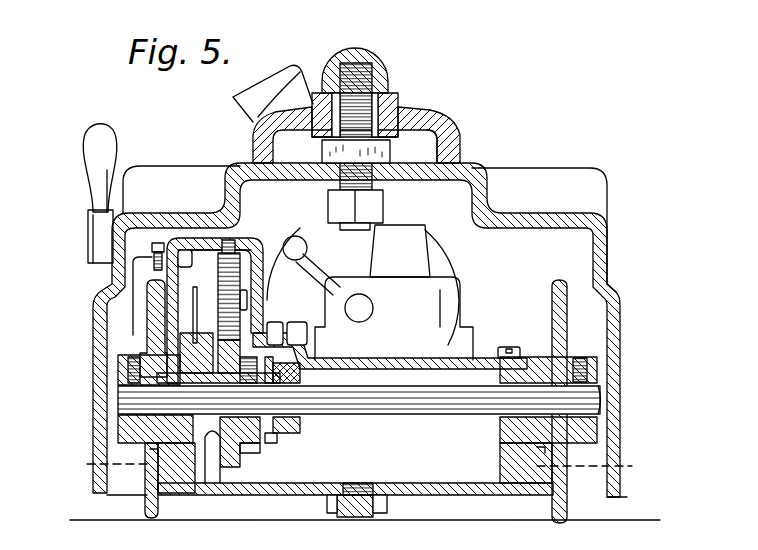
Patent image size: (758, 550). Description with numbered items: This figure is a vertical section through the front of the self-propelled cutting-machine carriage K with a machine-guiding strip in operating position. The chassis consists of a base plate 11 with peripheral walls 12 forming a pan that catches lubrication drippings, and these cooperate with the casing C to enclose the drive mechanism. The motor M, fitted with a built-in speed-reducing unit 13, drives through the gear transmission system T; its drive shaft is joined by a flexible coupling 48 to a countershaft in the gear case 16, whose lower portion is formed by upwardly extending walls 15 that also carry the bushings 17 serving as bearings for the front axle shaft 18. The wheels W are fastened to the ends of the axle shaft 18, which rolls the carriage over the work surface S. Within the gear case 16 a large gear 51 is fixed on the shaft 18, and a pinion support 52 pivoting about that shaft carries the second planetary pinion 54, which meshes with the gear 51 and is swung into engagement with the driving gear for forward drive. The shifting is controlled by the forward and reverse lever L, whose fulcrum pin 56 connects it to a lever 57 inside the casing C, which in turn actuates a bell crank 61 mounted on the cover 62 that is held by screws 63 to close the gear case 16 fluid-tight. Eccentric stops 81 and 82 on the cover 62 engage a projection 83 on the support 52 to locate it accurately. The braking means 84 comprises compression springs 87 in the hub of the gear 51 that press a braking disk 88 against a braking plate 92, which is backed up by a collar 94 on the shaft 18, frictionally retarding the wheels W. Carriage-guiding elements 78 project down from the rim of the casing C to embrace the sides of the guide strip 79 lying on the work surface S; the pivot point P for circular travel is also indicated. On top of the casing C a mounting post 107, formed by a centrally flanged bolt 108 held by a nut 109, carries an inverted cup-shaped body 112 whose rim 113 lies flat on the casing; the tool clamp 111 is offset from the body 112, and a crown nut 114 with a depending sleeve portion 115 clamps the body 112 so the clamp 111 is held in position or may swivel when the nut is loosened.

The base plate 11 is at (257, 495).
The walls 12 is at (356, 466).
The speed-reducing unit 13 is at (447, 337).
The walls 15 is at (157, 450).
The gear case 16 is at (263, 286).
The bushings 17 is at (118, 425).
The front axle shaft 18 is at (383, 412).
The flexible coupling 48 is at (298, 322).
The gear 51 is at (230, 480).
The pinion support 52 is at (183, 302).
The second planetary pinion 54 is at (240, 273).
The fulcrum pin 56 is at (88, 233).
The lever 57 is at (132, 270).
The bell crank 61 is at (123, 328).
The cover 62 is at (229, 252).
The screws 63 is at (504, 347).
The carriage-guiding elements 78 is at (327, 508).
The guide strip 79 is at (347, 518).
The eccentric stop 81 is at (163, 277).
The eccentric stop 82 is at (185, 250).
The projection 83 is at (190, 248).
The braking means 84 is at (286, 351).
The compression springs 87 is at (257, 447).
The braking disk 88 is at (263, 450).
The braking plate 92 is at (277, 440).
The collar 94 is at (300, 428).
The mounting post 107 is at (380, 78).
The centrally flanged bolt 108 is at (455, 127).
The nut 109 is at (383, 204).
The tool clamp 111 is at (260, 78).
The cup-shaped body 112 is at (425, 113).
The rim 113 is at (455, 141).
The crown nut 114 is at (382, 62).
The sleeve portion 115 is at (398, 100).
The carriage K is at (186, 159).
The forward and reverse lever L is at (84, 168).
The motor M is at (454, 260).
The gear transmission system T is at (257, 232).
The casing C is at (624, 307).
The work surface S is at (650, 520).
The pivot point P is at (453, 479).
The wheels W is at (153, 526).